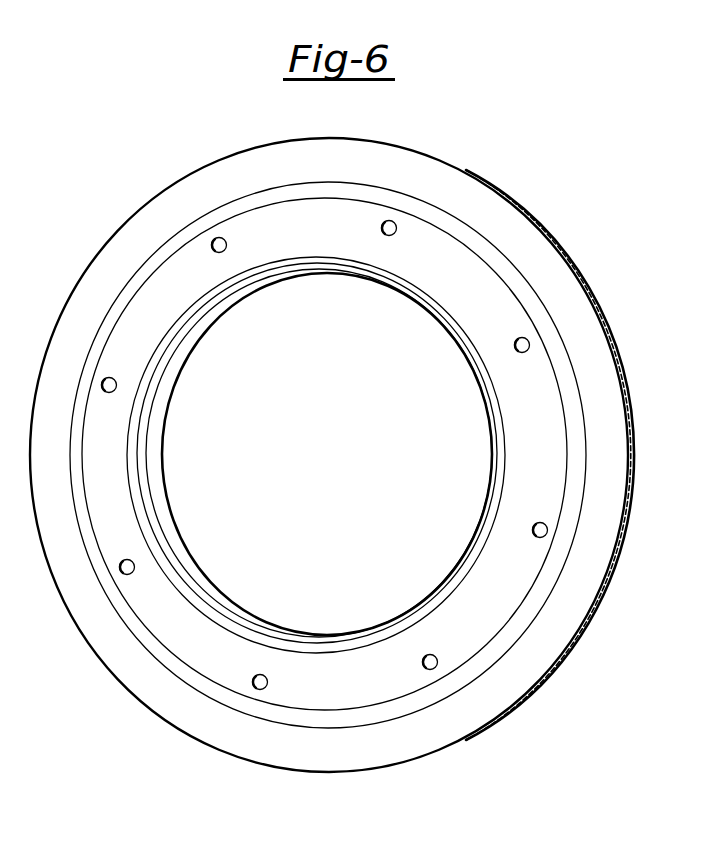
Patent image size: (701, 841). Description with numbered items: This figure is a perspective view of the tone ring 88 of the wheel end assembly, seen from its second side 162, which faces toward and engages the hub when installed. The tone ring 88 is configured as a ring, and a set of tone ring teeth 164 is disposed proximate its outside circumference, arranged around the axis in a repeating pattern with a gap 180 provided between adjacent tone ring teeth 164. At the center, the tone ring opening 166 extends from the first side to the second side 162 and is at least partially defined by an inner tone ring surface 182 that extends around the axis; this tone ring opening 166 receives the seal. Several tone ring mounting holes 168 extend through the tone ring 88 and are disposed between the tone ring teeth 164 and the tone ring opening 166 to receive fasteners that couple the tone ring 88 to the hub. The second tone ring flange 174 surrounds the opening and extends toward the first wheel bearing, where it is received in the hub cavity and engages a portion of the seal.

The tone ring 88 is at (173, 174).
The second side 162 is at (113, 641).
The set of tone ring teeth 164 is at (607, 322).
The tone ring opening 166 is at (334, 446).
The tone ring mounting holes 168 is at (382, 227).
The second tone ring flange 174 is at (453, 597).
The gap 180 is at (501, 193).
The inner tone ring surface 182 is at (467, 558).